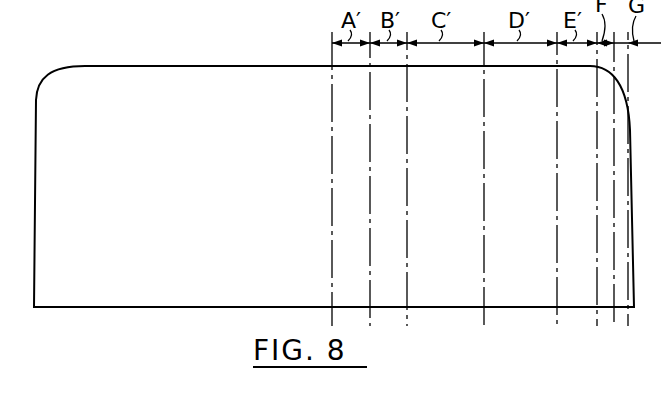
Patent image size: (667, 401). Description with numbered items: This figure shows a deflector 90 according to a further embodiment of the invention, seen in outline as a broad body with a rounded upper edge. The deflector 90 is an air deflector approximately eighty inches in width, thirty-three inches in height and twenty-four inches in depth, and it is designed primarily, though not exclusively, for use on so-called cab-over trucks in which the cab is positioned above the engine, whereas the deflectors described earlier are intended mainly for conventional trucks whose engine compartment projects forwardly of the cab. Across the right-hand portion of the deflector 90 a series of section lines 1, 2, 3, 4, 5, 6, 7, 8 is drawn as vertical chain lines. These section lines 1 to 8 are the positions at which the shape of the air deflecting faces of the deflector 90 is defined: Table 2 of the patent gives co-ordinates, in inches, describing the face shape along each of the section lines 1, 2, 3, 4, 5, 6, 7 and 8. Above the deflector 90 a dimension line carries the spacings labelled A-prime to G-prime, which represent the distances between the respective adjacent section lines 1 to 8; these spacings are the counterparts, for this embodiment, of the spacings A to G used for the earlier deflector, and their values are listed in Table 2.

The deflector 90 is at (172, 62).
The section line 1 is at (332, 203).
The section line 2 is at (370, 193).
The section line 3 is at (407, 196).
The section line 4 is at (484, 200).
The section line 5 is at (557, 194).
The section line 6 is at (597, 218).
The section line 7 is at (614, 195).
The section line 8 is at (630, 182).